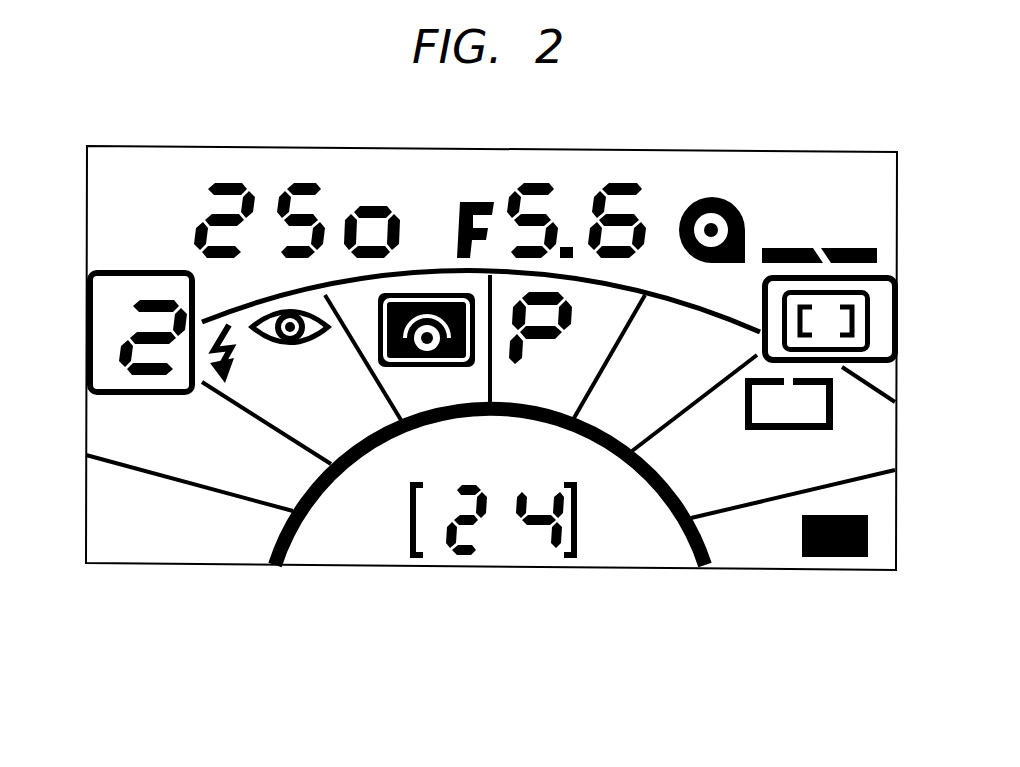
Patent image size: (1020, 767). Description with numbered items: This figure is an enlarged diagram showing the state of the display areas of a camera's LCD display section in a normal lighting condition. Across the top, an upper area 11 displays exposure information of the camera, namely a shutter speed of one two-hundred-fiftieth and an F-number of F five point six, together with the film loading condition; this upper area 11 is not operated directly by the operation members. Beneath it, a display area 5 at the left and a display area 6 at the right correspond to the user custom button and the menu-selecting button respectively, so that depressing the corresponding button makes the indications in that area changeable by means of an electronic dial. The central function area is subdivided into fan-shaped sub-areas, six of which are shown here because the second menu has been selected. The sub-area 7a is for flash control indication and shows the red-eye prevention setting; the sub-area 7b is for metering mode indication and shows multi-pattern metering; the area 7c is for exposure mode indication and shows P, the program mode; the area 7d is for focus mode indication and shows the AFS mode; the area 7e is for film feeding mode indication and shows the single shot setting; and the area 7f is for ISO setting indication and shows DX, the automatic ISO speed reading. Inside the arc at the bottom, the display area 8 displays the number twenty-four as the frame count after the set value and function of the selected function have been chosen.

The upper area 11 is at (492, 158).
The display area 5 is at (115, 280).
The display area 6 is at (890, 300).
The sub-area 7a is at (332, 417).
The sub-area 7b is at (412, 377).
The area 7c is at (535, 378).
The area 7d is at (628, 425).
The area 7e is at (728, 493).
The area 7f is at (883, 560).
The display area 8 is at (483, 553).